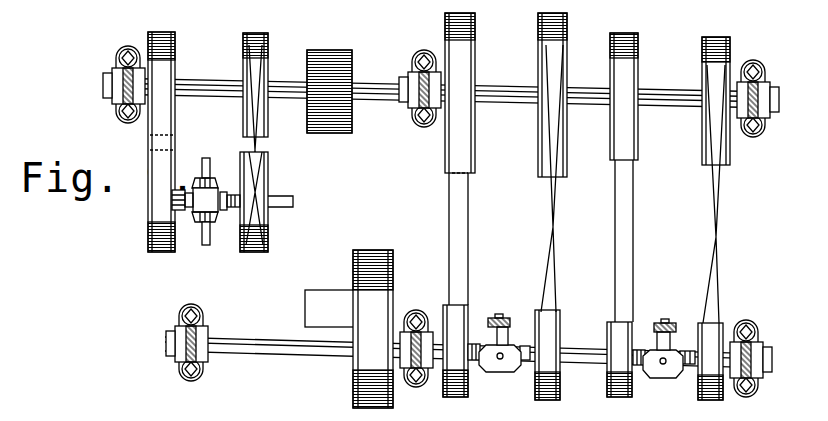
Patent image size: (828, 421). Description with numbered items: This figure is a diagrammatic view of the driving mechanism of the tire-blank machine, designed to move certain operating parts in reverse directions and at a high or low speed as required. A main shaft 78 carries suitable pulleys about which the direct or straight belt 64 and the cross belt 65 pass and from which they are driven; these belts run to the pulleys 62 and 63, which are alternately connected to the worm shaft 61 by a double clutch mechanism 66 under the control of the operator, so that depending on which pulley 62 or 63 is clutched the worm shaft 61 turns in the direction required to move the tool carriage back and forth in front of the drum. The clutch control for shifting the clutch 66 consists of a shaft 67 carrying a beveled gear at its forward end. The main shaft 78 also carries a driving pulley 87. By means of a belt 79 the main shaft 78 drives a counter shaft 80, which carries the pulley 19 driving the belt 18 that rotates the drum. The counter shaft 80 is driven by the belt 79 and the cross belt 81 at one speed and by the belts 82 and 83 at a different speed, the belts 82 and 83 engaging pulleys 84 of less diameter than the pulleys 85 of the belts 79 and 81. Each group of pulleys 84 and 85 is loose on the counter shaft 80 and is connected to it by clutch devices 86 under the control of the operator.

The belt 18 is at (373, 329).
The pulley 19 is at (356, 276).
The worm shaft 61 is at (292, 203).
The pulley 62 is at (147, 236).
The pulley 63 is at (269, 233).
The direct or straight belt 64 is at (152, 141).
The cross belt 65 is at (257, 118).
The double clutch mechanism 66 is at (212, 182).
The shaft 67 is at (209, 246).
The main shaft 78 is at (368, 84).
The belt 79 is at (449, 214).
The counter shaft 80 is at (263, 346).
The cross belt 81 is at (556, 226).
The belt 82 is at (636, 241).
The belt 83 is at (727, 194).
The pulleys 84 is at (702, 80).
The pulleys 85 is at (537, 139).
The clutch devices 86 is at (509, 366).
The driving pulley 87 is at (320, 57).